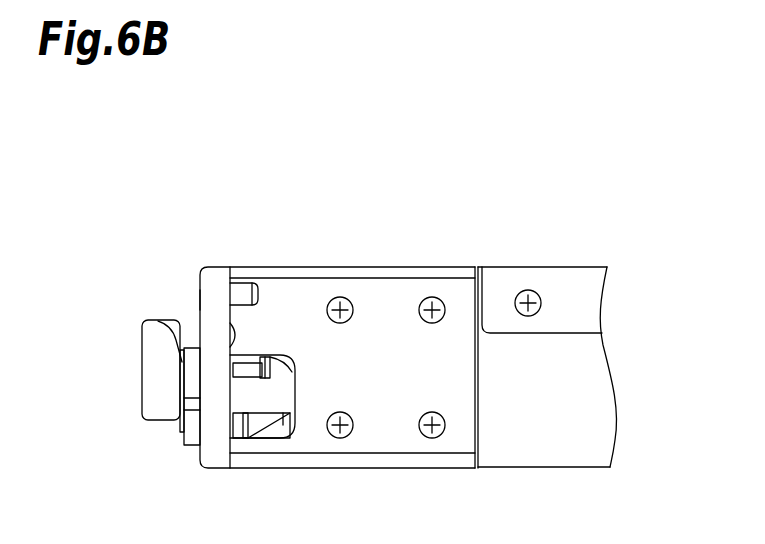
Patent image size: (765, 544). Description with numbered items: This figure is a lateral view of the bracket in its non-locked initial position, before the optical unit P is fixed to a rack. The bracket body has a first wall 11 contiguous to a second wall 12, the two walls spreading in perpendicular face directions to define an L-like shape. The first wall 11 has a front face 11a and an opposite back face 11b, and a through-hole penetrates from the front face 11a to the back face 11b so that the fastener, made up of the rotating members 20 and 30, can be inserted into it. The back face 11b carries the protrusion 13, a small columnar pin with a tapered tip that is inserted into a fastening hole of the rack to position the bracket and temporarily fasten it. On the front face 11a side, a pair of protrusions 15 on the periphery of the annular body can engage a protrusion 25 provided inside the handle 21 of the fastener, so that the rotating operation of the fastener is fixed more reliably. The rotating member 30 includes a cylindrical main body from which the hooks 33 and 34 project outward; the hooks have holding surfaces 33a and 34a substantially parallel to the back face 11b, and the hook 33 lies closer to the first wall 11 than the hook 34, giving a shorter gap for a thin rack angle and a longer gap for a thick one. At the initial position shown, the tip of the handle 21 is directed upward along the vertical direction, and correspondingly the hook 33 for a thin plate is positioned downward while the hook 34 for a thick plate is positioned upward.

The first wall 11 is at (218, 282).
The front face 11a is at (200, 300).
The back face 11b is at (235, 343).
The second wall 12 is at (385, 297).
The protrusion 13 is at (233, 280).
The protrusions 15 is at (192, 412).
The rotating member 20 is at (155, 383).
The handle 21 is at (158, 321).
The protrusion 25 is at (175, 338).
The rotating member 30 is at (287, 436).
The hook 33 is at (267, 432).
The holding surface 33a is at (242, 433).
The hook 34 is at (263, 362).
The holding surface 34a is at (262, 358).
The optical unit P is at (593, 397).